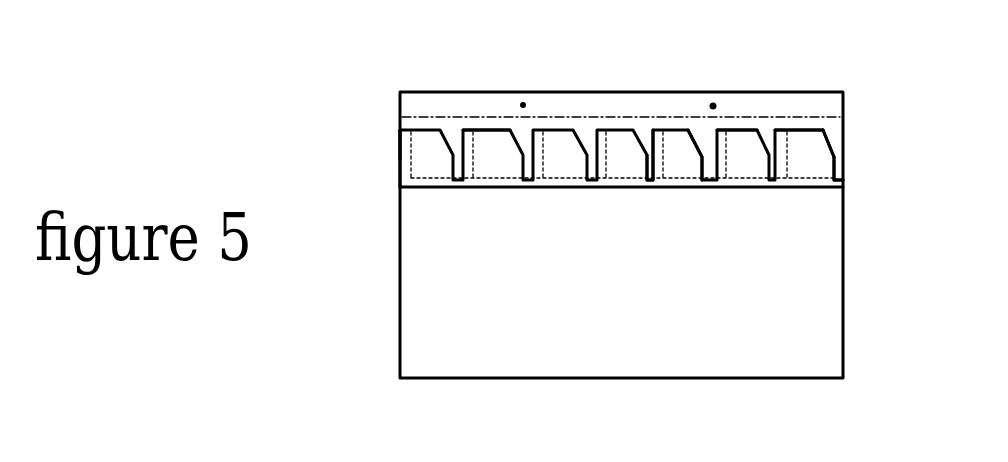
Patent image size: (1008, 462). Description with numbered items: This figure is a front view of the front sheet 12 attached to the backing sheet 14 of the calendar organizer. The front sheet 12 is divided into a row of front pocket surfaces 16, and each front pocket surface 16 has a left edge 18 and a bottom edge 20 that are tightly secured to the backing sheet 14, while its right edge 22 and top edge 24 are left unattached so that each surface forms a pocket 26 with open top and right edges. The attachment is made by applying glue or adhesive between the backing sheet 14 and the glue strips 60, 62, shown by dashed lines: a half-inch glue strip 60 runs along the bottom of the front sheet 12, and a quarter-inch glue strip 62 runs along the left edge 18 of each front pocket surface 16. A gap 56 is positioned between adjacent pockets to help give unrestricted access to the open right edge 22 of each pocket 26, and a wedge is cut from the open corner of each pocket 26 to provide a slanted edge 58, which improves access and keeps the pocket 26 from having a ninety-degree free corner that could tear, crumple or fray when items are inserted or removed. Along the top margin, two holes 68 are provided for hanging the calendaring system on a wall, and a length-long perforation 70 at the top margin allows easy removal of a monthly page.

The front sheet 12 is at (398, 165).
The backing sheet 14 is at (415, 225).
The front pocket surface 16 is at (628, 157).
The left edge 18 is at (403, 149).
The bottom edge 20 is at (496, 188).
The right edge 22 is at (835, 167).
The top edge 24 is at (484, 130).
The pocket 26 is at (742, 155).
The gap 56 is at (706, 148).
The slanted edge 58 is at (826, 140).
The glue strip 60 is at (618, 188).
The glue strip 62 is at (650, 140).
The hole 68 is at (714, 105).
The perforation 70 is at (763, 118).